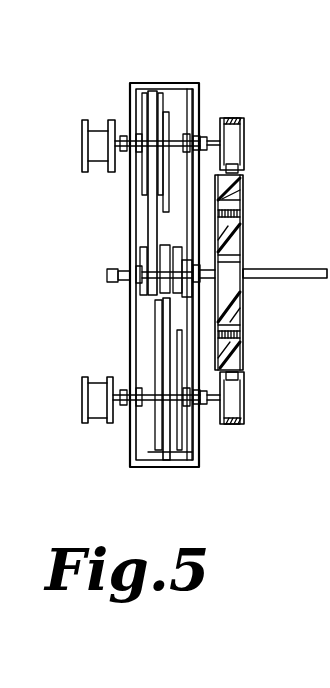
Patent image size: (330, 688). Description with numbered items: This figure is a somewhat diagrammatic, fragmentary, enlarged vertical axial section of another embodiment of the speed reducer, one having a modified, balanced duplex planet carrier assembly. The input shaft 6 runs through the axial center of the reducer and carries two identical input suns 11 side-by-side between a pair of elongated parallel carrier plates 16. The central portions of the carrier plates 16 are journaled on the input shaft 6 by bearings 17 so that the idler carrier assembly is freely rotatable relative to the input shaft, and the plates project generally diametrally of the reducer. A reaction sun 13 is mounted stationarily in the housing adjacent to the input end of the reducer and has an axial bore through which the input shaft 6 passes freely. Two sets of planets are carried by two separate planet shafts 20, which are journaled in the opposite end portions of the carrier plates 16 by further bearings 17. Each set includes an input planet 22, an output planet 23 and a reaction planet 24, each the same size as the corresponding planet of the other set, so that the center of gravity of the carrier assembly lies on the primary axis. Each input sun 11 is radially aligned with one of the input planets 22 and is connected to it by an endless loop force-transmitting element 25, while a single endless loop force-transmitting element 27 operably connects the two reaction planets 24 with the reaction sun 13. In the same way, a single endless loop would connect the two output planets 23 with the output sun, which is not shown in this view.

The input shaft 6 is at (300, 268).
The input sun 11 is at (140, 255).
The reaction sun 13 is at (237, 195).
The carrier plates 16 is at (192, 318).
The bearings 17 is at (123, 130).
The planet shafts 20 is at (205, 138).
The input planet 22 is at (167, 100).
The output planet 23 is at (82, 158).
The reaction planet 24 is at (245, 145).
The endless loop force-transmitting element 25 is at (153, 243).
The endless loop force-transmitting element 27 is at (223, 116).